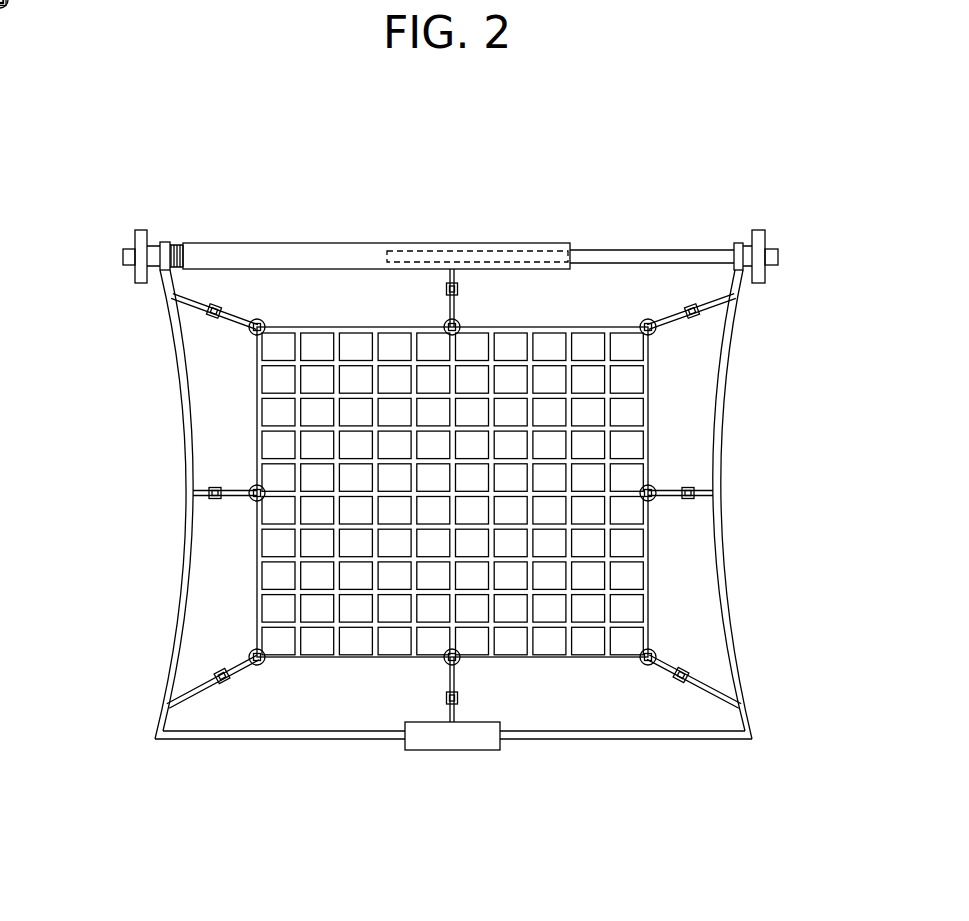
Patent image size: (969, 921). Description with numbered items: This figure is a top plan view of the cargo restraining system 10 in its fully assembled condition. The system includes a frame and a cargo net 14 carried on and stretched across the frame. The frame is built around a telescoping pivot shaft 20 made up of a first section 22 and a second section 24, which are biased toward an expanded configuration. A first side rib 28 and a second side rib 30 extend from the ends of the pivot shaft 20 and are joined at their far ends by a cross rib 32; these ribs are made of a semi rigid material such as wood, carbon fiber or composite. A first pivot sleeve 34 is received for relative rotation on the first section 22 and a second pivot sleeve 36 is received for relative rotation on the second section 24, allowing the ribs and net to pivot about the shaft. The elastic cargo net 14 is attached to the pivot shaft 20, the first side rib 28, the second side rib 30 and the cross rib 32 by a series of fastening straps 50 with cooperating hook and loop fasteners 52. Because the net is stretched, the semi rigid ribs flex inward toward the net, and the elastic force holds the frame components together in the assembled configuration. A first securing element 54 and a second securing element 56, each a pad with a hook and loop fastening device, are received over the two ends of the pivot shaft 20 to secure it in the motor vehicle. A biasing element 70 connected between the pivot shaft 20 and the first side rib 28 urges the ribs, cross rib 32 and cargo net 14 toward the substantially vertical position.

The cargo restraining system 10 is at (613, 158).
The cargo net 14 is at (258, 582).
The pivot shaft 20 is at (318, 243).
The first section 22 is at (123, 258).
The second section 24 is at (645, 250).
The first side rib 28 is at (186, 437).
The second side rib 30 is at (720, 455).
The cross rib 32 is at (353, 737).
The first pivot sleeve 34 is at (157, 240).
The second pivot sleeve 36 is at (747, 247).
The fastening straps 50 is at (457, 307).
The hook and loop fasteners 52 is at (209, 318).
The first securing element 54 is at (135, 238).
The second securing element 56 is at (767, 238).
The biasing element 70 is at (178, 243).